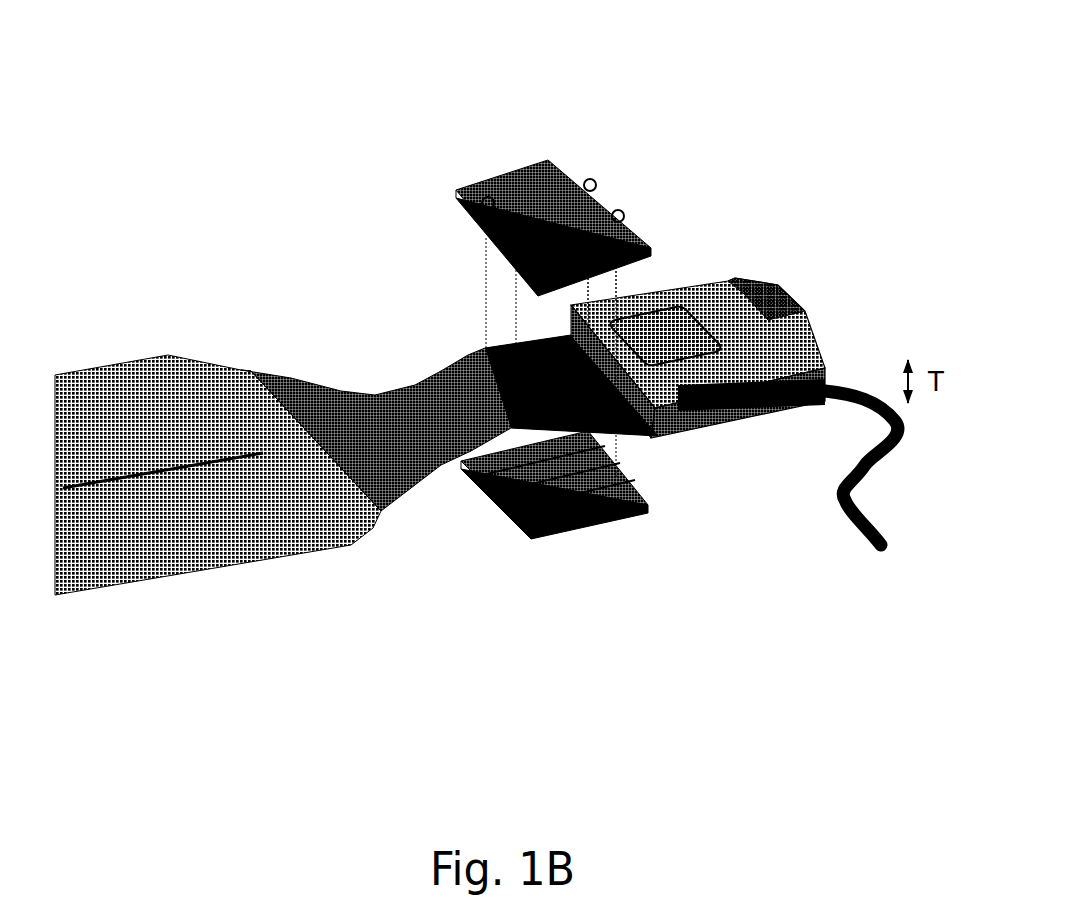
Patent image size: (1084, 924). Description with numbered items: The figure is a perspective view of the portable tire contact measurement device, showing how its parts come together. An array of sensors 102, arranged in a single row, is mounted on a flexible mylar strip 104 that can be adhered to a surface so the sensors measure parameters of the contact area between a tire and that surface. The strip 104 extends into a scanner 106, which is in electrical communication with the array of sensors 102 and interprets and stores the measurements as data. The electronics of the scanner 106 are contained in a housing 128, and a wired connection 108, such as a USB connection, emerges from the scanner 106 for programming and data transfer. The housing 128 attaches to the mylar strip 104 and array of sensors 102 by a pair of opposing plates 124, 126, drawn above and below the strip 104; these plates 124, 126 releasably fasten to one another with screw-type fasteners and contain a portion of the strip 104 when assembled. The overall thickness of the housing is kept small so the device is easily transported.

The array of sensors 102 is at (85, 477).
The mylar strip 104 is at (236, 367).
The scanner 106 is at (803, 292).
The wired connection 108 is at (850, 542).
The plate 124 is at (553, 157).
The plate 126 is at (522, 507).
The housing 128 is at (737, 270).